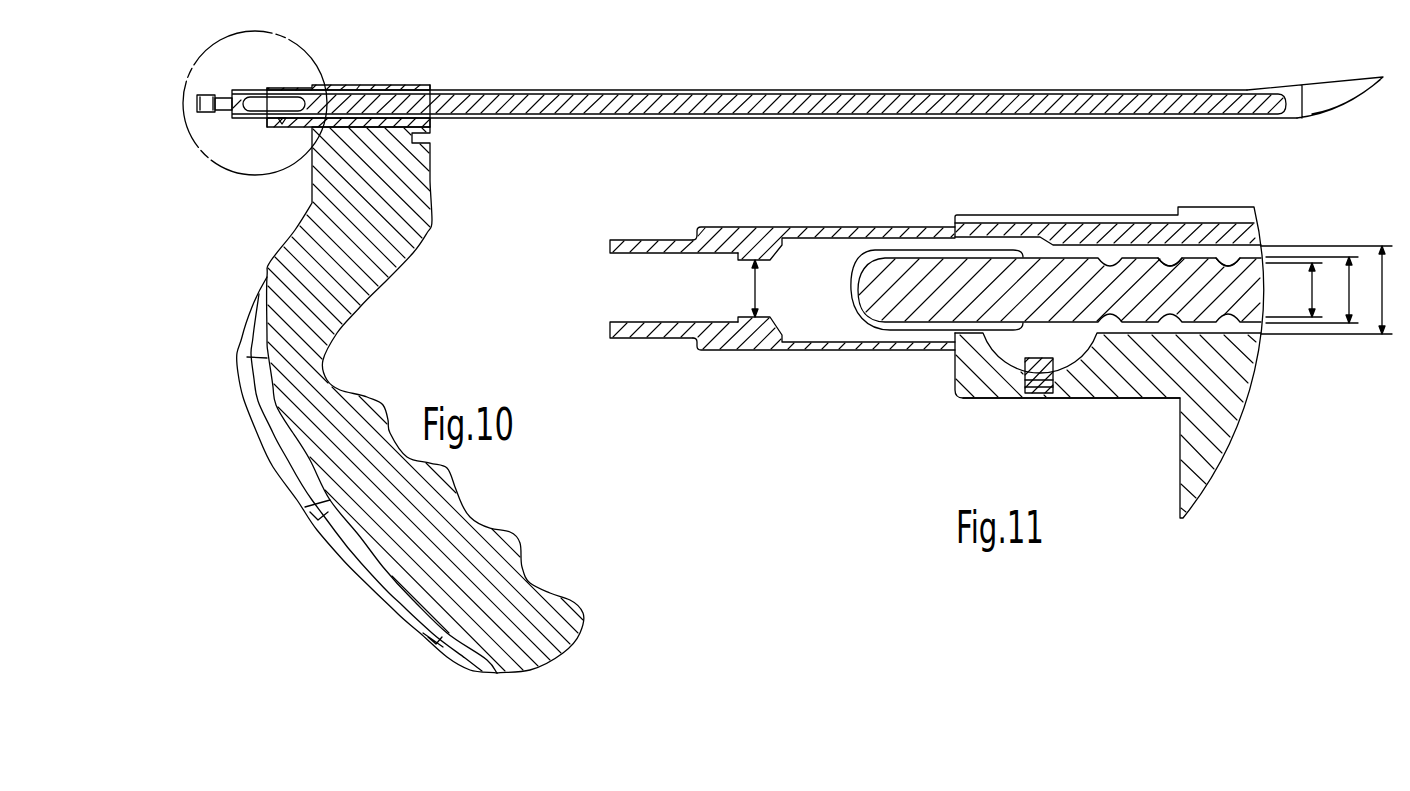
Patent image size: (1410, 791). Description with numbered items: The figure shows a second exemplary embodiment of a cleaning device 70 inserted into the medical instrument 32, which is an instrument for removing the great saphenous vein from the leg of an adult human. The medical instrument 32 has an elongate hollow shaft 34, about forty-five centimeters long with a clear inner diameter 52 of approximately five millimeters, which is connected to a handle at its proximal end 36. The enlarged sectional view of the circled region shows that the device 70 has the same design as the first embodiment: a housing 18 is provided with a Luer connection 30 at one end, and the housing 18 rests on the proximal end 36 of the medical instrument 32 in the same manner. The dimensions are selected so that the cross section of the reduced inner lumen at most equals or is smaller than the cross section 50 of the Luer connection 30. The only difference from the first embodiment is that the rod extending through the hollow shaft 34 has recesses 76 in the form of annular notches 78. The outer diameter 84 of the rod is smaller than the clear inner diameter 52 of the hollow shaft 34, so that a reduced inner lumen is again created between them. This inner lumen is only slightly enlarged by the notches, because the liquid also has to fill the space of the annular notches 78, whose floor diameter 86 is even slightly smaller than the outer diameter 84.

In FIG. 10, the device 70 is at (690, 111).
In FIG. 10, the medical instrument 32 is at (250, 500).
In FIG. 11, the Luer connection 30 is at (661, 245).
In FIG. 11, the housing 18 is at (873, 232).
In FIG. 11, the cross section 50 is at (753, 284).
In FIG. 11, the hollow shaft 34 is at (1090, 235).
In FIG. 11, the proximal end 36 is at (953, 368).
In FIG. 11, the clear inner diameter 52 is at (1350, 290).
In FIG. 11, the recesses 76 is at (1172, 258).
In FIG. 11, the annular notches 78 is at (1232, 258).
In FIG. 11, the outer diameter 84 is at (1381, 286).
In FIG. 11, the floor diameter 86 is at (1311, 292).